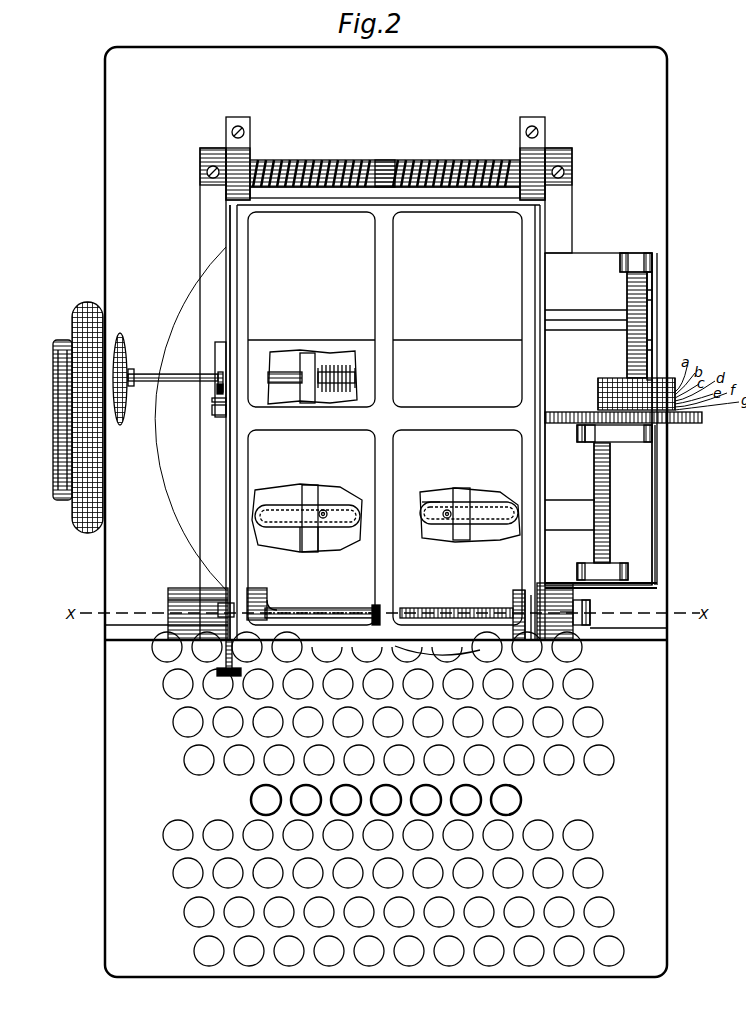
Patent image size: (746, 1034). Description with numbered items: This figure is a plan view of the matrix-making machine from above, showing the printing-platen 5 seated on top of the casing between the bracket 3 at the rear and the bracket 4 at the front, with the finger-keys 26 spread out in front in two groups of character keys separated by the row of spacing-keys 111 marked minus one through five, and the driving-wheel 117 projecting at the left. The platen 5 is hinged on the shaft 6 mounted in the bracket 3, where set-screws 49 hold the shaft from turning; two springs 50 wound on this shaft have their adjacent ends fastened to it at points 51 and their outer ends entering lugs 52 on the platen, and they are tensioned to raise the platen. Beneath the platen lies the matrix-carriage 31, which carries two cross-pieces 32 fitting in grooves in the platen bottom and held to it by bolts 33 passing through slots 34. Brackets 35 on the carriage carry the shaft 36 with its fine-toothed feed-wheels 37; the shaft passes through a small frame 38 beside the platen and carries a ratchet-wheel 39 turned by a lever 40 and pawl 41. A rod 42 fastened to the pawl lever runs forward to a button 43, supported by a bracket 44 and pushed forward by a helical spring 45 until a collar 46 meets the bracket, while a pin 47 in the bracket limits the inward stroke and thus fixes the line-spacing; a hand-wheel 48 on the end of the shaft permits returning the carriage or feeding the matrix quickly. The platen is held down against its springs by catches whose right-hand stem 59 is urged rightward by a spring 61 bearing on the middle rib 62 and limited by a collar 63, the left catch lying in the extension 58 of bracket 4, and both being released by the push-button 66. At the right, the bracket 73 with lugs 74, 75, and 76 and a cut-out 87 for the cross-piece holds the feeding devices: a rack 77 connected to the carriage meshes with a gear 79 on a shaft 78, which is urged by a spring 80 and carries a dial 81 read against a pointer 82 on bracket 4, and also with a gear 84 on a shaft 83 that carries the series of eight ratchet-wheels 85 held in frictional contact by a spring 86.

The bracket 3 is at (200, 255).
The bracket 4 is at (178, 588).
The printing-platen 5 is at (457, 309).
The shaft 6 is at (343, 160).
The finger-keys 26 is at (176, 826).
The matrix-carriage 31 is at (312, 404).
The cross-pieces 32 is at (348, 521).
The bolts 33 is at (328, 510).
The slots 34 is at (276, 502).
The brackets 35 is at (300, 354).
The shaft 36 is at (322, 370).
The feed-wheels 37 is at (348, 396).
The frame 38 is at (212, 416).
The ratchet-wheel 39 is at (215, 396).
The lever 40 is at (226, 400).
The pawl 41 is at (226, 378).
The rod 42 is at (226, 482).
The button 43 is at (216, 672).
The bracket 44 is at (236, 610).
The helical spring 45 is at (200, 626).
The collar 46 is at (242, 600).
The pin 47 is at (237, 658).
The hand-wheel 48 is at (124, 428).
The set-screws 49 is at (200, 174).
The springs 50 is at (305, 160).
The points 51 is at (396, 160).
The lugs 52 is at (252, 150).
The extension 58 is at (170, 590).
The stem 59 is at (231, 132).
The spring 61 is at (431, 598).
The middle rib 62 is at (386, 599).
The collar 63 is at (373, 608).
The push-button 66 is at (590, 614).
The bracket 73 is at (655, 487).
The lug 74 is at (630, 574).
The lug 75 is at (655, 455).
The lug 76 is at (654, 266).
The rack 77 is at (704, 418).
The shaft 78 is at (611, 472).
The gear 79 is at (588, 442).
The spring 80 is at (592, 492).
The dial 81 is at (657, 592).
The pointer 82 is at (600, 590).
The shaft 83 is at (648, 332).
The gear 84 is at (655, 439).
The series of ratchet-wheels 85 is at (587, 380).
The spring 86 is at (652, 297).
The cut-out 87 is at (567, 310).
The spacing-keys 111 is at (250, 800).
The driving-wheel 117 is at (56, 417).